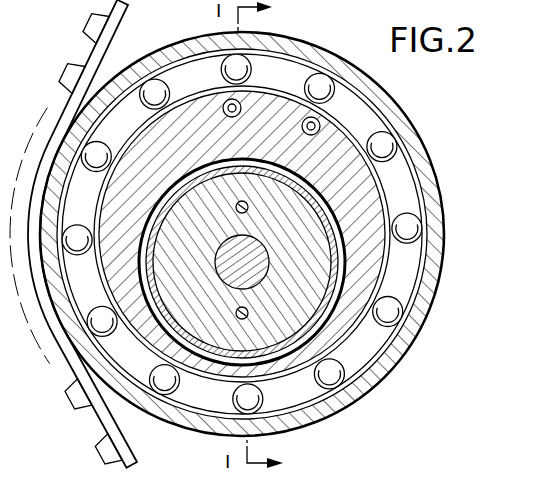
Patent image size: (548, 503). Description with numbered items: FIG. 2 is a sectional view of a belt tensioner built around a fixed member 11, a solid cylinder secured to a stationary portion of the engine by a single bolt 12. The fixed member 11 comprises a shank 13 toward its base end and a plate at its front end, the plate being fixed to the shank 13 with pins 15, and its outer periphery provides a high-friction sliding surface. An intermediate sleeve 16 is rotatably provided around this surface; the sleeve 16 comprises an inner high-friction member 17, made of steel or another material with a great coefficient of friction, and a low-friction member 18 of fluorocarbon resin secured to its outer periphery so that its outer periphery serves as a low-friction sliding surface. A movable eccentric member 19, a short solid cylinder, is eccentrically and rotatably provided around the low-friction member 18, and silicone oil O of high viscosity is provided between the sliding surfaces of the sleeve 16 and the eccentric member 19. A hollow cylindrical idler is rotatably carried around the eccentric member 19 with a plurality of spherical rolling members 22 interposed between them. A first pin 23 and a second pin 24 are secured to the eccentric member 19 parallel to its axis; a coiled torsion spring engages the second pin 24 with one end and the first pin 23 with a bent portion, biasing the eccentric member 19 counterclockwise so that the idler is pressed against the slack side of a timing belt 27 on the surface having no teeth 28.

The fixed member 11 is at (128, 251).
The bolt 12 is at (268, 260).
The shank 13 is at (319, 275).
The pins 15 is at (249, 207).
The intermediate sleeve 16 is at (172, 178).
The high-friction member 17 is at (151, 212).
The low-friction member 18 is at (330, 206).
The movable eccentric member 19 is at (283, 107).
The spherical rolling members 22 is at (154, 87).
The first pin 23 is at (222, 112).
The second pin 24 is at (310, 135).
The timing belt 27 is at (130, 454).
The teeth 28 is at (69, 66).
The silicone oil O is at (325, 325).